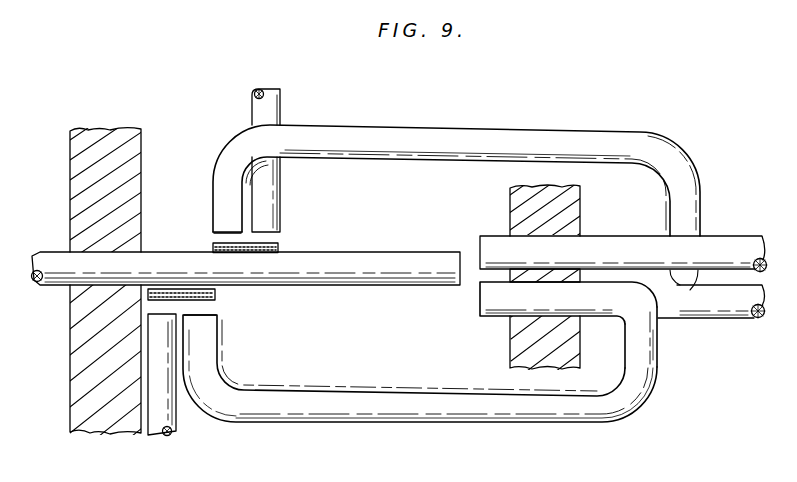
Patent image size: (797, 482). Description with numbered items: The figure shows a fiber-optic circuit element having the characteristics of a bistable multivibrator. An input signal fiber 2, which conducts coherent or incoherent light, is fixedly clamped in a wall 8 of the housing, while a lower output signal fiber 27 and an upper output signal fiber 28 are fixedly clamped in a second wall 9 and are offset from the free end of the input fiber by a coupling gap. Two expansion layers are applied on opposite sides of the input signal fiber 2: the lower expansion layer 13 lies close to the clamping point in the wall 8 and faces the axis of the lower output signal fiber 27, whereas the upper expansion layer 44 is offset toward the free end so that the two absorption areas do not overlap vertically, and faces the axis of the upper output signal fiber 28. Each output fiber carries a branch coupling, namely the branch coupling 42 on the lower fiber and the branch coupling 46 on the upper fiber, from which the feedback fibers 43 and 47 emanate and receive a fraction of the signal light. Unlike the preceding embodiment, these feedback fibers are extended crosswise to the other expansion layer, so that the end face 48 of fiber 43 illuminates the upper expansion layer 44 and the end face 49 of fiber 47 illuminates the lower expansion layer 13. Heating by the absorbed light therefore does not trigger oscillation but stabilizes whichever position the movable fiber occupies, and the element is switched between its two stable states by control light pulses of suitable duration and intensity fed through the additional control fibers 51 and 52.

The input signal fiber 2 is at (393, 263).
The wall 8 is at (132, 152).
The wall 9 is at (570, 205).
The expansion layer 13 is at (218, 296).
The lower output signal fiber 27 is at (535, 309).
The upper output signal fiber 28 is at (508, 245).
The branch coupling 42 is at (663, 296).
The feedback fiber 43 is at (465, 143).
The expansion layer 44 is at (283, 248).
The branch coupling 46 is at (628, 250).
The feedback fiber 47 is at (403, 392).
The end face 48 is at (218, 234).
The end face 49 is at (212, 314).
The control light fiber 51 is at (170, 411).
The control light fiber 52 is at (273, 189).